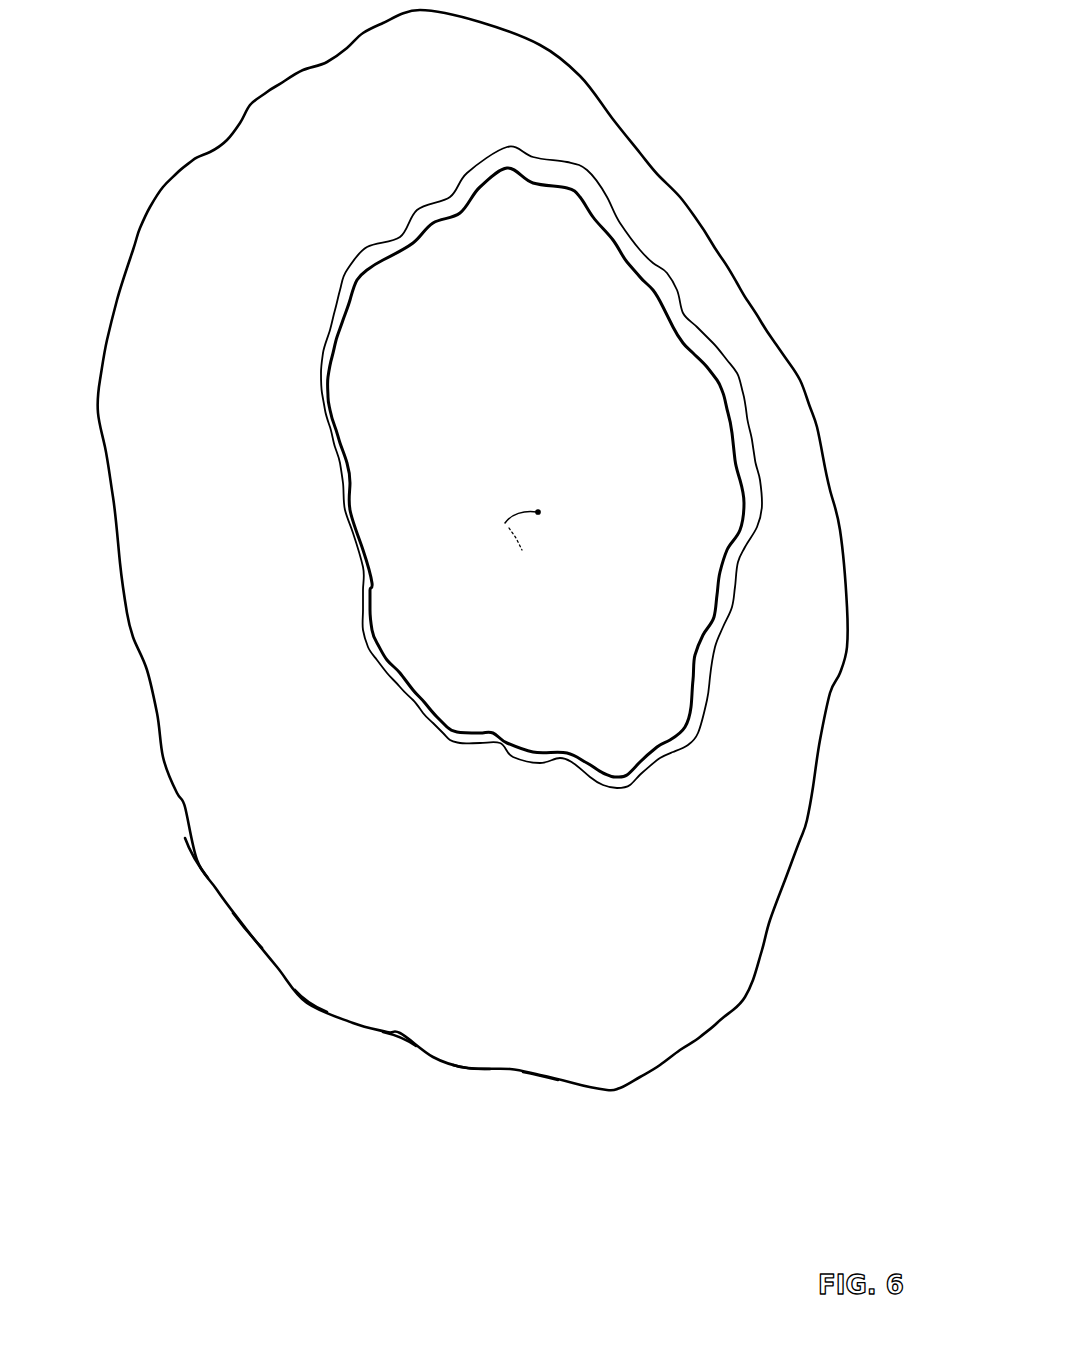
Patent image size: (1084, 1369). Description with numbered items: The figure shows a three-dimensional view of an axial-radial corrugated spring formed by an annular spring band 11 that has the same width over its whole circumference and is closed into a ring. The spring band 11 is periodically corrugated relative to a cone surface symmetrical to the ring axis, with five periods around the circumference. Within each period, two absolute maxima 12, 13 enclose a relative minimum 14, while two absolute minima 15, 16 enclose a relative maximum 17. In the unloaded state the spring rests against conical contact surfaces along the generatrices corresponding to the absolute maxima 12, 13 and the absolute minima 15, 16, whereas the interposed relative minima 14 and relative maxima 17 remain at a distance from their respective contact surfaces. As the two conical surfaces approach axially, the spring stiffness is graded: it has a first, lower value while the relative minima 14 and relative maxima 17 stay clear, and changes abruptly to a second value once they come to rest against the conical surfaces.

The annular spring band 11 is at (677, 1103).
The absolute maximum 12 is at (193, 862).
The absolute maximum 13 is at (310, 1005).
The relative minimum 14 is at (248, 932).
The absolute minimum 15 is at (400, 1040).
The absolute minimum 16 is at (540, 1077).
The relative maximum 17 is at (470, 1073).